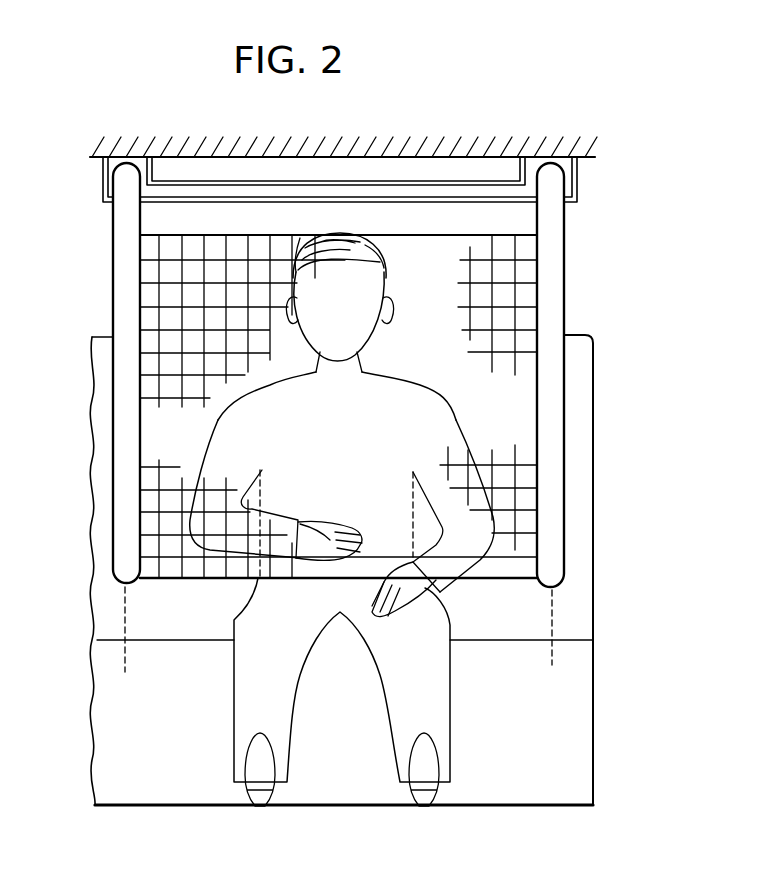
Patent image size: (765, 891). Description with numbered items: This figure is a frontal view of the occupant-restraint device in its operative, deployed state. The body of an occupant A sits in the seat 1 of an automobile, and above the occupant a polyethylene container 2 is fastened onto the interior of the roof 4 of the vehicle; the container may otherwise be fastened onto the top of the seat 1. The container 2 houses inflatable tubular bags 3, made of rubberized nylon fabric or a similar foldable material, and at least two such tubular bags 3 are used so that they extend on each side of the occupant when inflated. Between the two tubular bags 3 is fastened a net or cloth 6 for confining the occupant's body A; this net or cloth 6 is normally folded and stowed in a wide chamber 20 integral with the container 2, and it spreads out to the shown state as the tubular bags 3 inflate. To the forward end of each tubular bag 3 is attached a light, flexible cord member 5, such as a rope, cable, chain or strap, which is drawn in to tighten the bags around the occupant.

The seat 1 is at (580, 437).
The polyethylene container 2 is at (101, 186).
The inflatable tubular bags 3 is at (113, 248).
The roof 4 is at (327, 157).
The cord member 5 is at (128, 600).
The net or cloth 6 is at (515, 275).
The chamber 20 is at (396, 185).
The body of an occupant A is at (346, 432).